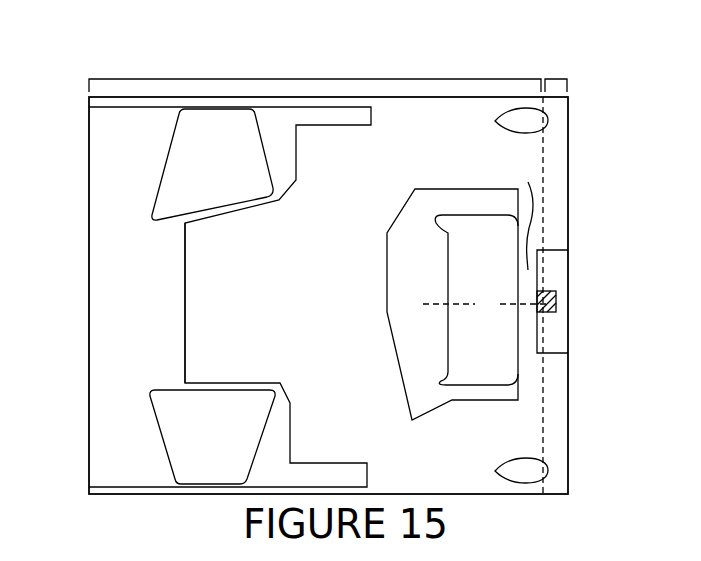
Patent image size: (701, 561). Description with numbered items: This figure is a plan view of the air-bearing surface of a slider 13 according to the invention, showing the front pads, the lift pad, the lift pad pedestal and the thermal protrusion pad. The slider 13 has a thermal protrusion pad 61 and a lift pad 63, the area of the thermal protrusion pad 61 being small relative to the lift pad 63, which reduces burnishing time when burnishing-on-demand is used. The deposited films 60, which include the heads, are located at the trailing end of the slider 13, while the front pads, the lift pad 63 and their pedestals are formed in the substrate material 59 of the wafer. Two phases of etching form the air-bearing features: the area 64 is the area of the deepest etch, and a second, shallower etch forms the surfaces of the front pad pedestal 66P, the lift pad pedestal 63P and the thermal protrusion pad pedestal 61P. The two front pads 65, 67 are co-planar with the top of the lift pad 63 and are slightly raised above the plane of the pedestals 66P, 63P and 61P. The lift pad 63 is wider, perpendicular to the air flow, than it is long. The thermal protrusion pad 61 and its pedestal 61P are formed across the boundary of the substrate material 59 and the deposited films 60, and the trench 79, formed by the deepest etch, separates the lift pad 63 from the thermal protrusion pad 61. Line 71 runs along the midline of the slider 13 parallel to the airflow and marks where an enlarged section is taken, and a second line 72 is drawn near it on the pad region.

The slider 13 is at (98, 163).
The substrate material 59 is at (330, 79).
The deposited films 60 is at (552, 79).
The thermal protrusion pad 61 is at (553, 300).
The thermal protrusion pad pedestal 61P is at (567, 266).
The lift pad 63 is at (448, 355).
The lift pad pedestal 63P is at (392, 276).
The area of deepest etch 64 is at (332, 355).
The front pad 65 is at (218, 398).
The front pad pedestal 66P is at (167, 304).
The front pad 67 is at (232, 197).
The section line 71 is at (455, 302).
The axis line 72 is at (512, 306).
The trench 79 is at (532, 213).